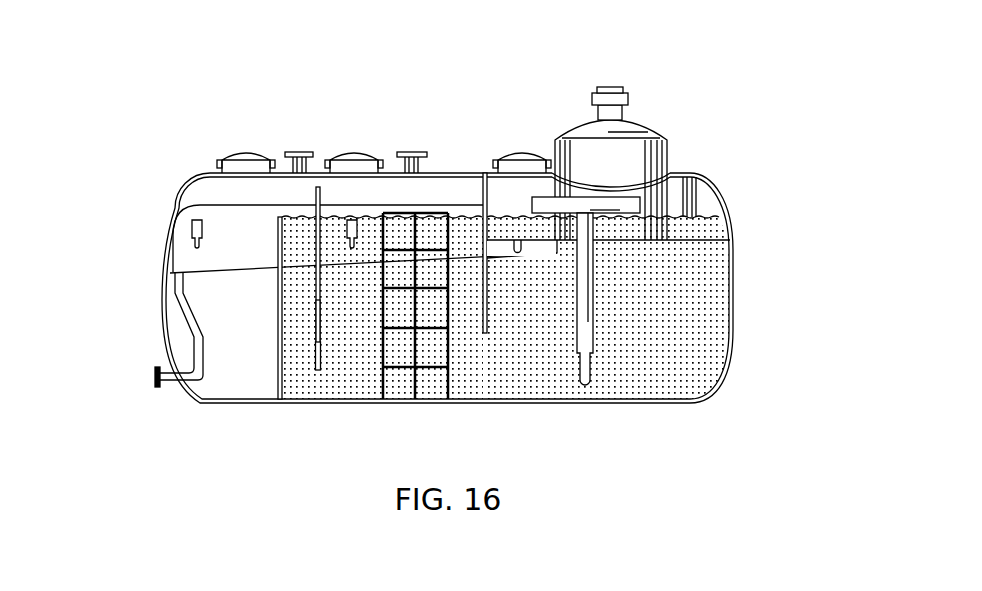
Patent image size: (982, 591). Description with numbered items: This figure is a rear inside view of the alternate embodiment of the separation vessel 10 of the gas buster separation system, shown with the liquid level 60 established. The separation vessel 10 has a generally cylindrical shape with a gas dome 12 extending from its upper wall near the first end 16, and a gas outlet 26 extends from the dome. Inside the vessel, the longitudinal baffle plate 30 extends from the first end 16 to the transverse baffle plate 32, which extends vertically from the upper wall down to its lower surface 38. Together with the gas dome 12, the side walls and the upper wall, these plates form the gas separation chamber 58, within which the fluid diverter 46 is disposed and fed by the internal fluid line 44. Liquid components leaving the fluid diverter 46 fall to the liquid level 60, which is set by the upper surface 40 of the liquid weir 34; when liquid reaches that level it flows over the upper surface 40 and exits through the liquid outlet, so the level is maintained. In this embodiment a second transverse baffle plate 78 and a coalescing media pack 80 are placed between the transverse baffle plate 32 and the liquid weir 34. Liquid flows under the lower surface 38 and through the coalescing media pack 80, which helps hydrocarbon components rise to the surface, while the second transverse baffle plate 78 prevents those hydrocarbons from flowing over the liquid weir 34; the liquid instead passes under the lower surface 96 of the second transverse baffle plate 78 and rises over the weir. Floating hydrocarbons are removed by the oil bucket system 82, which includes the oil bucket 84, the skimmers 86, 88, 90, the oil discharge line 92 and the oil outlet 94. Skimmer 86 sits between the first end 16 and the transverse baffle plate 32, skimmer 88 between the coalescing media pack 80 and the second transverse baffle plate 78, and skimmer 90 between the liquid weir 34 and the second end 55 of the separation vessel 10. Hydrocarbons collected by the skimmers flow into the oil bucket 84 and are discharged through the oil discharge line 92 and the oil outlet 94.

The separation vessel 10 is at (178, 122).
The gas dome 12 is at (643, 120).
The first end 16 is at (170, 273).
The gas outlet 26 is at (610, 86).
The longitudinal baffle plate 30 is at (710, 200).
The transverse baffle plate 32 is at (495, 328).
The liquid weir 34 is at (277, 377).
The lower surface 38 is at (488, 333).
The upper surface 40 is at (281, 212).
The internal fluid line 44 is at (593, 308).
The fluid diverter 46 is at (625, 200).
The second end 55 is at (730, 353).
The gas separation chamber 58 is at (703, 197).
The liquid level 60 is at (678, 217).
The second transverse baffle plate 78 is at (322, 355).
The coalescing media pack 80 is at (445, 382).
The oil bucket system 82 is at (175, 204).
The oil bucket 84 is at (298, 210).
The skimmer 86 is at (557, 253).
The skimmer 88 is at (357, 222).
The skimmer 90 is at (190, 228).
The oil discharge line 92 is at (180, 313).
The oil outlet 94 is at (152, 376).
The lower surface 96 is at (316, 342).